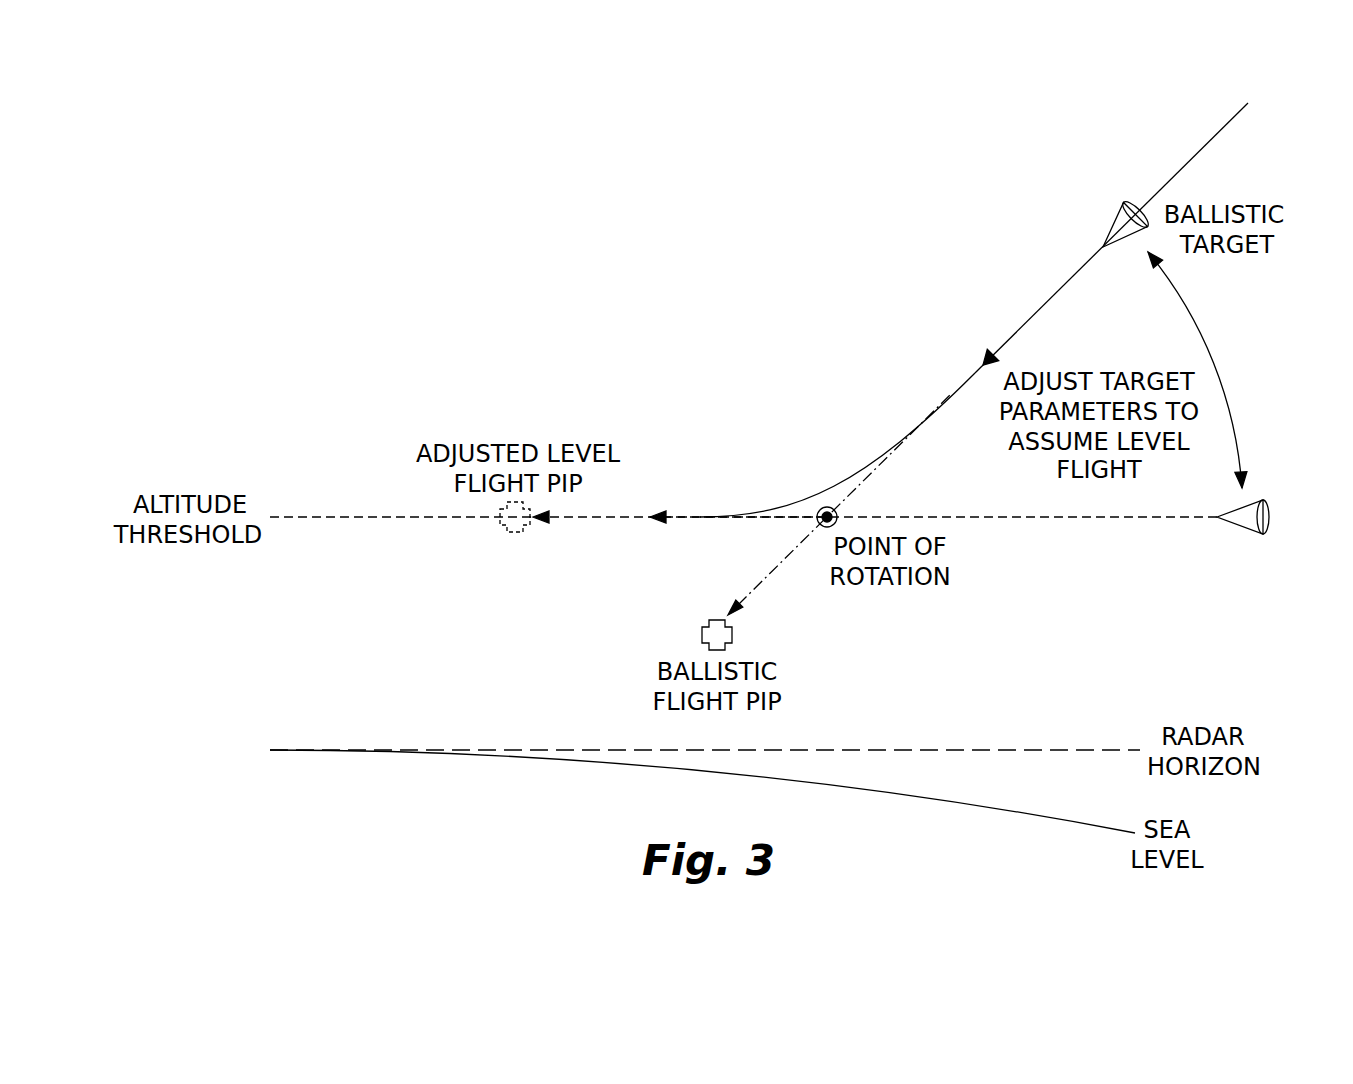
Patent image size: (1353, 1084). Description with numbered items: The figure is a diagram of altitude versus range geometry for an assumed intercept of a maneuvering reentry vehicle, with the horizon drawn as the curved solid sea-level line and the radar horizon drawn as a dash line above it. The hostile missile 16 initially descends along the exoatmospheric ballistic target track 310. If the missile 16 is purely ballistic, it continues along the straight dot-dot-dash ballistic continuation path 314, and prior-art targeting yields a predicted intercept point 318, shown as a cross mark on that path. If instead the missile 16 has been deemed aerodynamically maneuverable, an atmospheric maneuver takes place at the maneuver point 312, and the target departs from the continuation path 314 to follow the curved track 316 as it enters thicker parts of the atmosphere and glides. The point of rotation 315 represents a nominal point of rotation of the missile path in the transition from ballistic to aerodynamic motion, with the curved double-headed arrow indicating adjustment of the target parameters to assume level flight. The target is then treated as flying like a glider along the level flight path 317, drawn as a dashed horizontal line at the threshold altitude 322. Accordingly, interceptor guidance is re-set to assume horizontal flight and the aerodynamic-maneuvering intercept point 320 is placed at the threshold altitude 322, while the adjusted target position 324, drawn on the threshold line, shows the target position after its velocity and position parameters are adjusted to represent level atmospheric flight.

The hostile missile 16 is at (1110, 230).
The exoatmospheric ballistic target track 310 is at (1037, 310).
The atmospheric maneuver point 312 is at (980, 367).
The ballistic continuation path 314 is at (867, 483).
The point of rotation 315 is at (817, 522).
The curved track 316 is at (820, 495).
The level flight path 317 is at (628, 520).
The predicted intercept point 318 is at (700, 632).
The aerodynamic-maneuvering intercept point 320 is at (512, 532).
The threshold altitude 322 is at (385, 518).
The adjusted target position 324 is at (1237, 520).